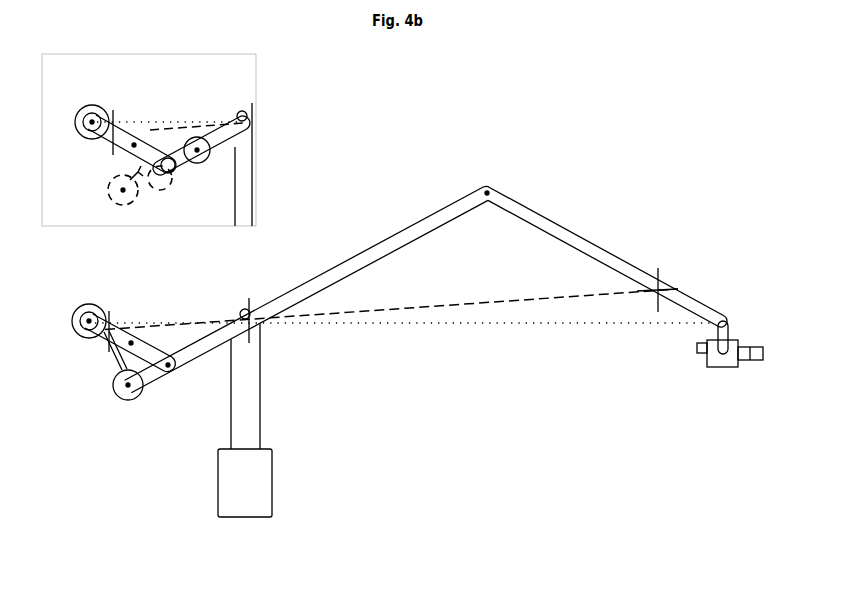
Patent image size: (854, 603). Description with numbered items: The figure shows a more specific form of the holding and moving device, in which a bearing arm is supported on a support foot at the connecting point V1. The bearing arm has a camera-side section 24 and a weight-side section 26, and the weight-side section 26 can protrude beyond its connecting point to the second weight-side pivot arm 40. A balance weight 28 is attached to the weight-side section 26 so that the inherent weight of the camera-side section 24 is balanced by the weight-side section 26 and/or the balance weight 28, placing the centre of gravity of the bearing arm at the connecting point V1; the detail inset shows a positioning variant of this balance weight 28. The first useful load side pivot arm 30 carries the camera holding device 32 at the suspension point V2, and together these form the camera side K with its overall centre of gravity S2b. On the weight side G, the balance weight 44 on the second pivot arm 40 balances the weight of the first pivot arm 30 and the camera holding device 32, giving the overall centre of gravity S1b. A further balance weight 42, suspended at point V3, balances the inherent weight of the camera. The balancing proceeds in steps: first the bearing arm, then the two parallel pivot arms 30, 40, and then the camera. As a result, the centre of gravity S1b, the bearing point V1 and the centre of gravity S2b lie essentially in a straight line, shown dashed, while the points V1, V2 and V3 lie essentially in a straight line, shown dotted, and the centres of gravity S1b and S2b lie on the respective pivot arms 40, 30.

The camera-side section of the bearing arm 24 is at (383, 246).
The weight-side section of the bearing arm 26 is at (200, 361).
The balance weight 28 is at (131, 400).
The first useful load side pivot arm 30 is at (606, 253).
The camera holding device 32 is at (718, 348).
The second weight-side pivot arm 40 is at (160, 345).
The balance weight for the camera 42 is at (80, 337).
The balance weight on the second pivot arm 44 is at (118, 372).
The connecting point V1 is at (243, 316).
The suspension point of the camera V2 is at (725, 320).
The suspension point of the camera balance weight V3 is at (86, 311).
The overall centre of gravity of the weight side S1b is at (108, 344).
The overall centre of gravity of the camera side S2b is at (662, 286).
The weight side G is at (117, 454).
The camera side K is at (509, 426).